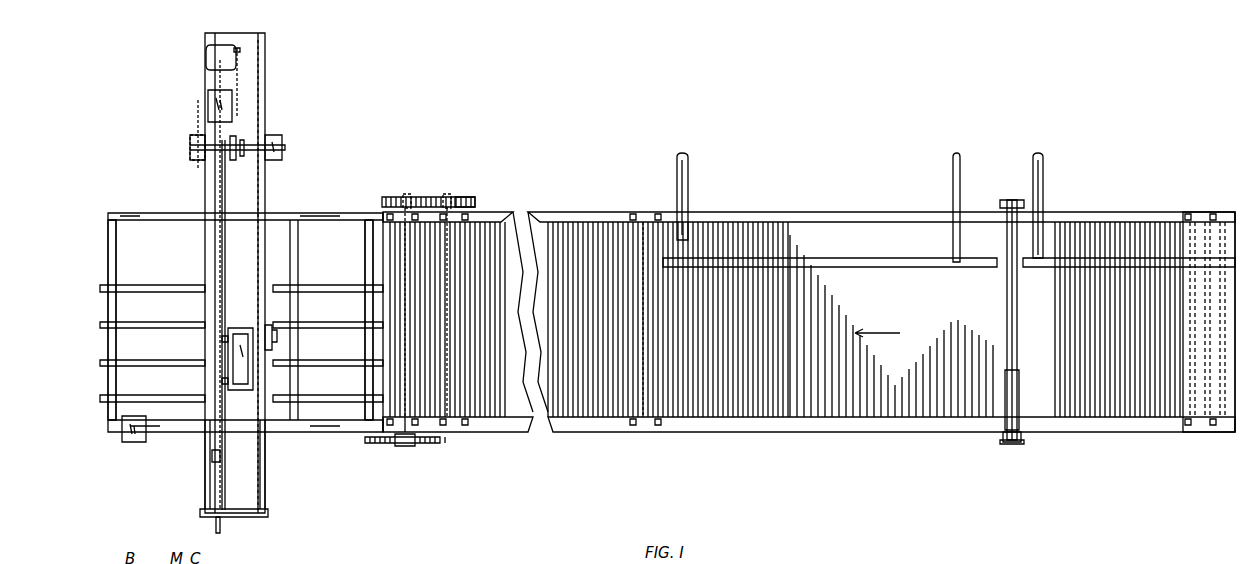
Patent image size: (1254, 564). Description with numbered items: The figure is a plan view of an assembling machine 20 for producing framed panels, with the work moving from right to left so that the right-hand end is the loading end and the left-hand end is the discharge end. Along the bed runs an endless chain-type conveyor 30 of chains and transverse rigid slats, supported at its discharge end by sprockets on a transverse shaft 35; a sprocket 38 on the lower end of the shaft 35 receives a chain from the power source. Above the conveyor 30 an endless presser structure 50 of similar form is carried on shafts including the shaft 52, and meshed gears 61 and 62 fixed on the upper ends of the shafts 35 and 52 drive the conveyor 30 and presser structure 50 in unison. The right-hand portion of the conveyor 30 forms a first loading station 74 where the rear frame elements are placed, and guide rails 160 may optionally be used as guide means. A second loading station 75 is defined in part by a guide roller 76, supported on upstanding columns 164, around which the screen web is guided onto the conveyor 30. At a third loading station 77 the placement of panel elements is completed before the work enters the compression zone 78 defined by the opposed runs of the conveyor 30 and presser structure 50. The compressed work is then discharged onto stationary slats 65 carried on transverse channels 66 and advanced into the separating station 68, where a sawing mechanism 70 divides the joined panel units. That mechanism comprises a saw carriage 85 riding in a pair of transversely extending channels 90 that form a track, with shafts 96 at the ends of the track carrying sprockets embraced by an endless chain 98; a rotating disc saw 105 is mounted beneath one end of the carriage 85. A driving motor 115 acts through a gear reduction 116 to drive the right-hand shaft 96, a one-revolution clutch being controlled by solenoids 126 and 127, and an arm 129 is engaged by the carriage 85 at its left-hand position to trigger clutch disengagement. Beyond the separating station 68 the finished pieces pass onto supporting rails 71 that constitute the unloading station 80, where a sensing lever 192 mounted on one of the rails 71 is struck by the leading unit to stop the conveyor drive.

The assembling machine 20 is at (741, 166).
The conveyor 30 is at (740, 390).
The transverse shaft 35 is at (406, 194).
The sprocket 38 is at (384, 446).
The presser structure 50 is at (560, 249).
The shaft 52 is at (447, 194).
The gear 61 is at (388, 198).
The gear 62 is at (471, 196).
The slats 65 is at (310, 396).
The transverse channels 66 is at (365, 304).
The separating station 68 is at (277, 443).
The sawing mechanism 70 is at (280, 183).
The supporting rails 71 is at (176, 315).
The first loading station 74 is at (1125, 446).
The second loading station 75 is at (986, 448).
The guide roller 76 is at (1005, 280).
The third loading station 77 is at (916, 448).
The compression zone 78 is at (570, 453).
The unloading station 80 is at (169, 446).
The saw carriage 85 is at (230, 370).
The transversely extending channels 90 is at (203, 492).
The shafts 96 is at (226, 521).
The endless chain 98 is at (218, 188).
The rotating disc saw 105 is at (277, 335).
The driving motor 115 is at (210, 61).
The gear reduction 116 is at (211, 94).
The solenoid 126 is at (195, 151).
The solenoid 127 is at (280, 148).
The arm 129 is at (215, 455).
The guide rails 160 is at (909, 268).
The upstanding columns 164 is at (1013, 200).
The sensing lever 192 is at (135, 414).